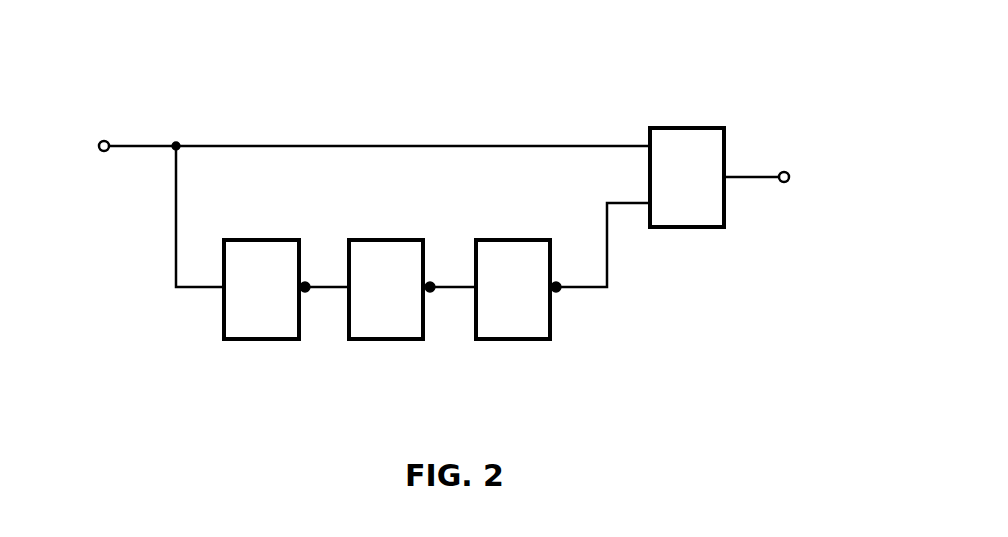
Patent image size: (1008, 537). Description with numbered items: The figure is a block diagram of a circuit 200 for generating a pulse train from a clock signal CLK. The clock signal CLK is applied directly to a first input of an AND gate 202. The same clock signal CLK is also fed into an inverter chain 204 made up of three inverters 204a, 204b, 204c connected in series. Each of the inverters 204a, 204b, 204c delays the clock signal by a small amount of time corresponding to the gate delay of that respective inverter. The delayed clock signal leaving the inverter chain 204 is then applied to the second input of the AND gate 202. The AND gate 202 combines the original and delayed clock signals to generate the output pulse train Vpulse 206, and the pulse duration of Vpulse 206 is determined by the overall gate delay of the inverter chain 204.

The circuit 200 is at (262, 74).
The AND gate 202 is at (691, 158).
The inverter chain 204 is at (568, 353).
The inverter 204a is at (286, 289).
The inverter 204b is at (412, 289).
The inverter 204c is at (562, 271).
The pulse train Vpulse 206 is at (808, 190).